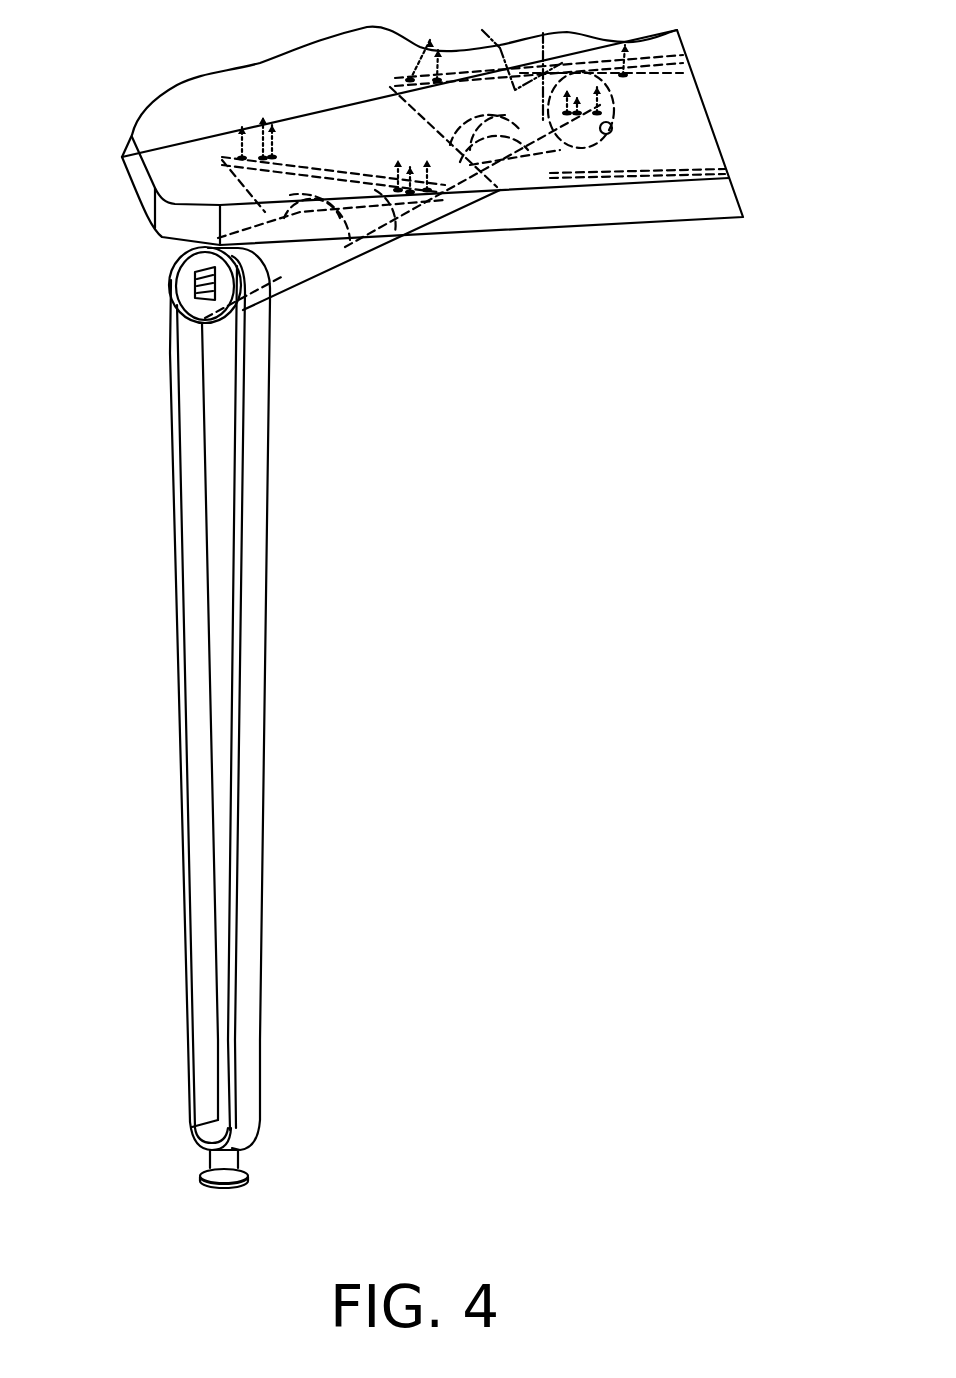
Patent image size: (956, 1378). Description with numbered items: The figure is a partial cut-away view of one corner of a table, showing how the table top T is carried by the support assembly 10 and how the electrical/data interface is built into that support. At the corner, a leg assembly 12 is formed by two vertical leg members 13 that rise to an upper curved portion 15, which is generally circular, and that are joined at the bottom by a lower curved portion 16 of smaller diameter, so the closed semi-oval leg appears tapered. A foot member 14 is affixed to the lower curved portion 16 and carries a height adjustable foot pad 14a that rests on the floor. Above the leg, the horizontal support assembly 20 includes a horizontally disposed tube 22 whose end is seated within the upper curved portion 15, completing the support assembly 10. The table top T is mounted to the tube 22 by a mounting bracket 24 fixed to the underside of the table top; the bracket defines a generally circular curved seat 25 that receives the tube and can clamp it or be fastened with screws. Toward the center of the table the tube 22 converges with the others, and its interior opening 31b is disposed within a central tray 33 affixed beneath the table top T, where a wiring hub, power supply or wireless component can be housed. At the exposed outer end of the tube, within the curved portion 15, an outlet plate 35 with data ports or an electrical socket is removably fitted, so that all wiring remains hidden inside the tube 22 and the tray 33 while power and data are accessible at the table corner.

The table top T is at (225, 100).
The support assembly 10 is at (460, 430).
The leg assembly 12 is at (275, 618).
The vertical leg members 13 is at (197, 827).
The foot member 14 is at (212, 1160).
The height adjustable foot pad 14a is at (230, 1162).
The upper curved portion 15 is at (175, 250).
The lower curved portion 16 is at (250, 1136).
The horizontal support assembly 20 is at (360, 272).
The tube 22 is at (292, 263).
The mounting bracket 24 is at (600, 120).
The curved seat 25 is at (505, 115).
The interior opening 31b is at (603, 122).
The central tray 33 is at (683, 72).
The outlet plate 35 is at (185, 283).